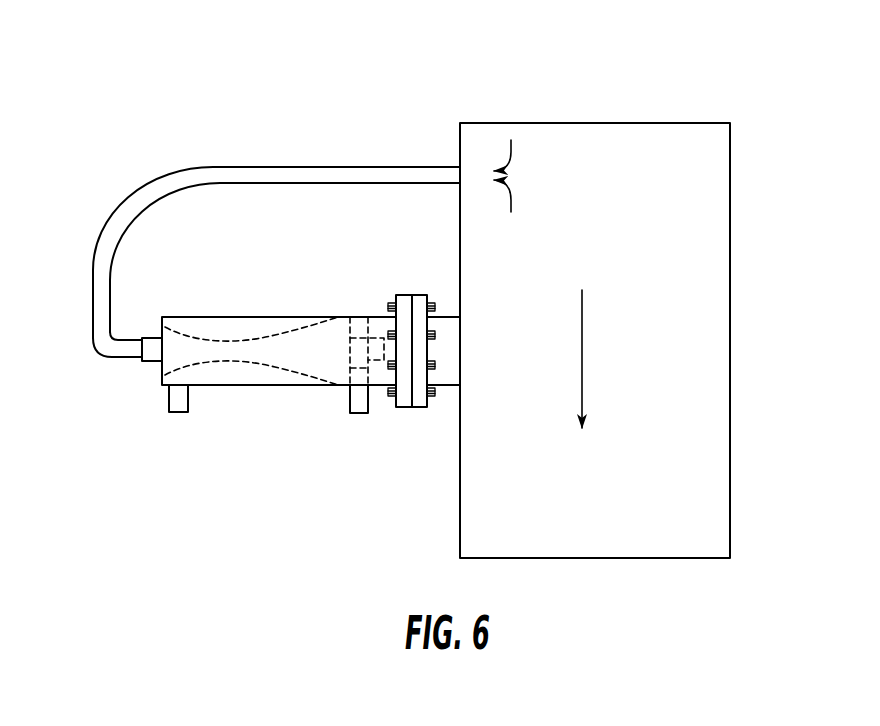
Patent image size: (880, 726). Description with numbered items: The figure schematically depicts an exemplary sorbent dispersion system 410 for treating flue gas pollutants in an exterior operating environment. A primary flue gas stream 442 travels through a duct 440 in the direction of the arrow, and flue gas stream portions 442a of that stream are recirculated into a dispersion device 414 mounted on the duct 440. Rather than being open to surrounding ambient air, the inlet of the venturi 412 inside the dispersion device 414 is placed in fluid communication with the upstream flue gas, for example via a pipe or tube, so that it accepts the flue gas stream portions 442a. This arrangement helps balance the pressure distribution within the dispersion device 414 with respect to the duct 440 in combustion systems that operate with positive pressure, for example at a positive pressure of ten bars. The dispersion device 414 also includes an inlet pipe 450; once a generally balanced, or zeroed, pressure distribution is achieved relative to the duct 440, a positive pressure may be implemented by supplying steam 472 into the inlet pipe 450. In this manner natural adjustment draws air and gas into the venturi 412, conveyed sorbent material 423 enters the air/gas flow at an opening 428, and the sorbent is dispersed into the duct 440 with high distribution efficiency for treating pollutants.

The system 410 is at (306, 124).
The venturi 412 is at (268, 328).
The dispersion device 414 is at (256, 299).
The conveyed sorbent material 423 is at (363, 422).
The opening 428 is at (376, 346).
The duct 440 is at (714, 204).
The primary flue gas stream 442 is at (582, 371).
The flue gas stream portions 442a is at (512, 128).
The inlet pipe 450 is at (169, 412).
The steam 472 is at (181, 422).